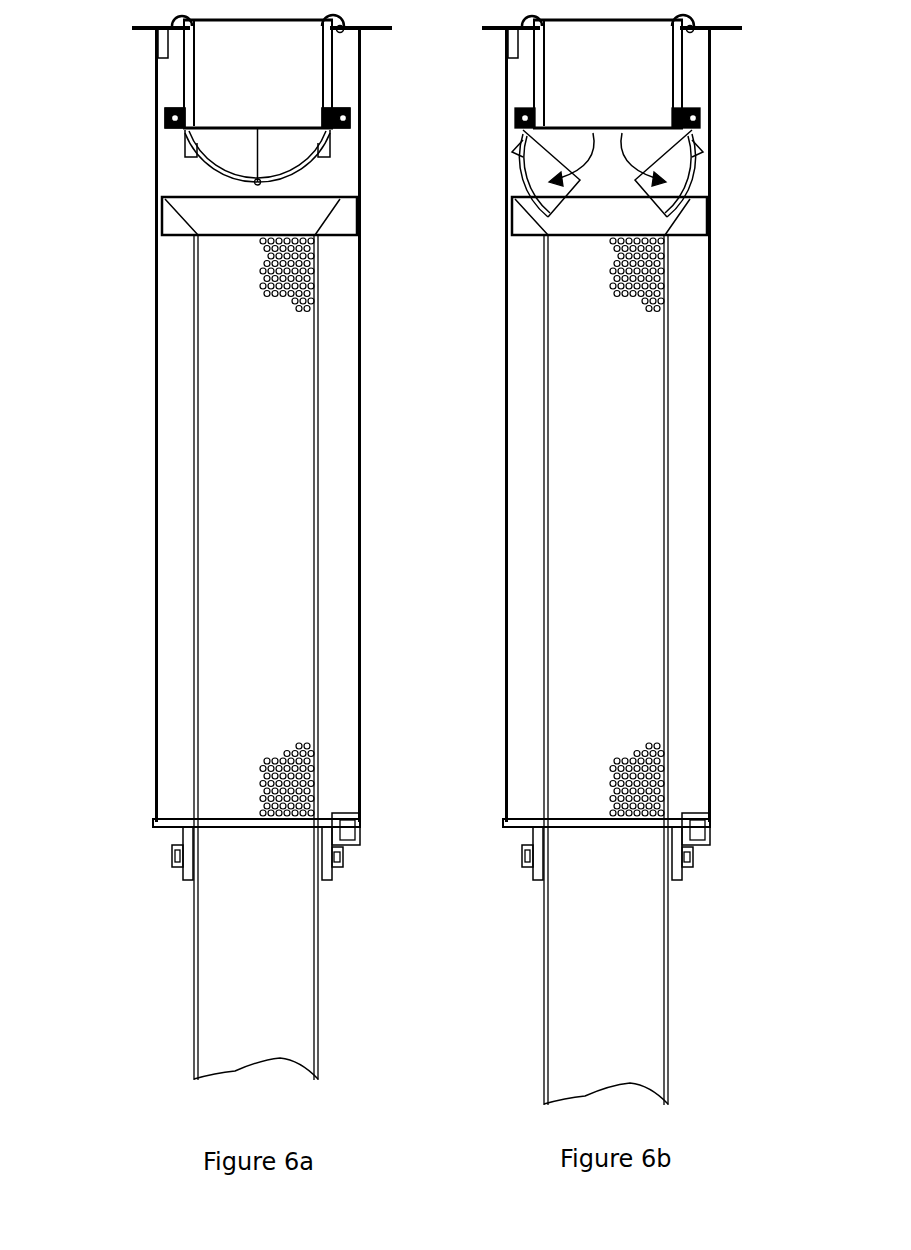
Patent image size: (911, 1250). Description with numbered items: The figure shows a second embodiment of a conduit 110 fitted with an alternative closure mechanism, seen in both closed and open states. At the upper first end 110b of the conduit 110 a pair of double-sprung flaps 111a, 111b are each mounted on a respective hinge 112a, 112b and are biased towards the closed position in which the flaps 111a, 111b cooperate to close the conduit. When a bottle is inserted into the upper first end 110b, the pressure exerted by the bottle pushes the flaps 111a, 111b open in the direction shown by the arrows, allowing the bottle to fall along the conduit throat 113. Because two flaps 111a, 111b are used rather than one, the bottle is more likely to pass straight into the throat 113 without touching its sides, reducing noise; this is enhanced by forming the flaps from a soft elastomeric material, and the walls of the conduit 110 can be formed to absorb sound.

In FIG. 6B, the conduit 110 is at (557, 424).
In FIG. 6A, the upper first end 110b is at (290, 108).
In FIG. 6B, the upper first end 110b is at (608, 71).
In FIG. 6A, the double-sprung flap 111a is at (215, 172).
In FIG. 6B, the double-sprung flap 111a is at (508, 189).
In FIG. 6A, the double-sprung flap 111b is at (300, 172).
In FIG. 6B, the double-sprung flap 111b is at (714, 173).
In FIG. 6A, the hinge 112a is at (172, 118).
In FIG. 6A, the hinge 112b is at (352, 118).
In FIG. 6B, the conduit throat 113 is at (671, 670).